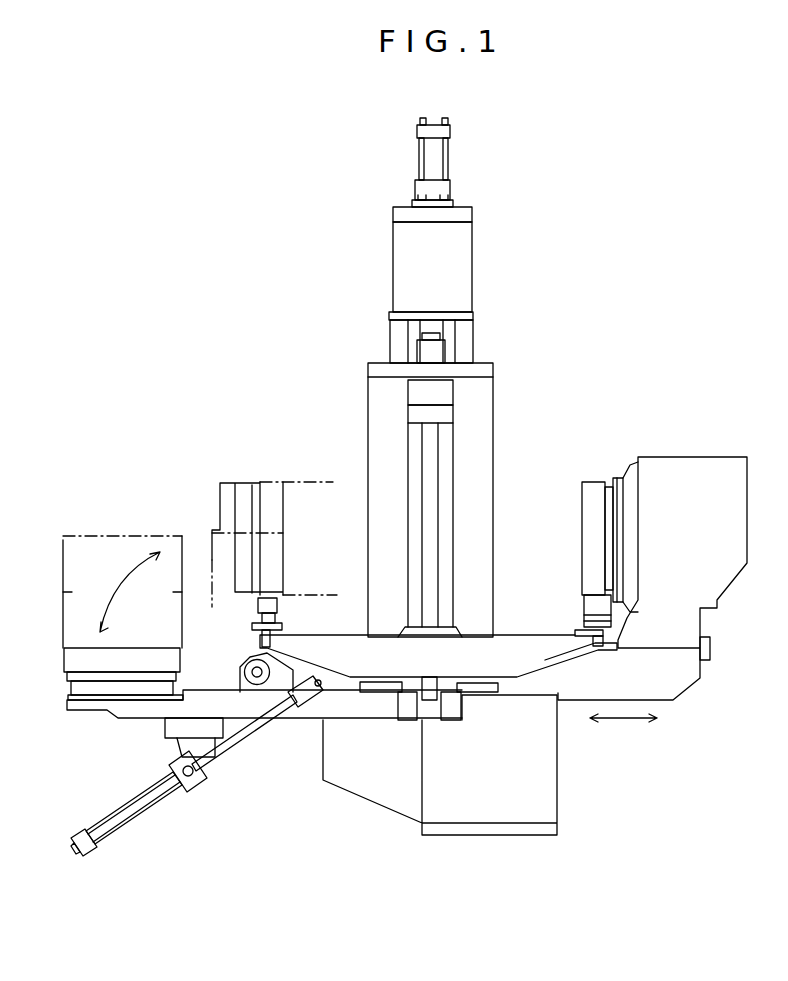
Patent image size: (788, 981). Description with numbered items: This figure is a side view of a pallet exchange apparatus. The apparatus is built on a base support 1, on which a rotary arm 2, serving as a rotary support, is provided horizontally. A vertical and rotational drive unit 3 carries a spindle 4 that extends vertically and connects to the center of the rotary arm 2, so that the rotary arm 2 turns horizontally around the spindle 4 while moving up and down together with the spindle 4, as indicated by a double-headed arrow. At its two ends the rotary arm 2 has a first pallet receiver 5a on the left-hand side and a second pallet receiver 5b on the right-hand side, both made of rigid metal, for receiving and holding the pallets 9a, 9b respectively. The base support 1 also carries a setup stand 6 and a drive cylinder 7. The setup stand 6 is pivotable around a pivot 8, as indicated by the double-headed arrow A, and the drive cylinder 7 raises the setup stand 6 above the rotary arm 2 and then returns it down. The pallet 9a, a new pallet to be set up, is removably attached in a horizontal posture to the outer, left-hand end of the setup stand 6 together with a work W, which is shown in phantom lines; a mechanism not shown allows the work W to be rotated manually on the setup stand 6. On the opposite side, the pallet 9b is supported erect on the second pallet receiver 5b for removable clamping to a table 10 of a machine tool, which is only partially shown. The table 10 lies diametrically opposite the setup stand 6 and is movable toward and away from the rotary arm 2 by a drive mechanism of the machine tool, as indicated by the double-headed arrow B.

The base support 1 is at (502, 835).
The rotary arm 2 is at (347, 665).
The vertical and rotational drive unit 3 is at (472, 270).
The spindle 4 is at (431, 452).
The first pallet receiver 5a is at (277, 605).
The second pallet receiver 5b is at (575, 607).
The setup stand 6 is at (198, 690).
The drive cylinder 7 is at (145, 820).
The pivot 8 is at (250, 658).
The pallet 9a is at (90, 648).
The pallet 9b is at (592, 482).
The table 10 is at (665, 703).
The work W is at (120, 532).